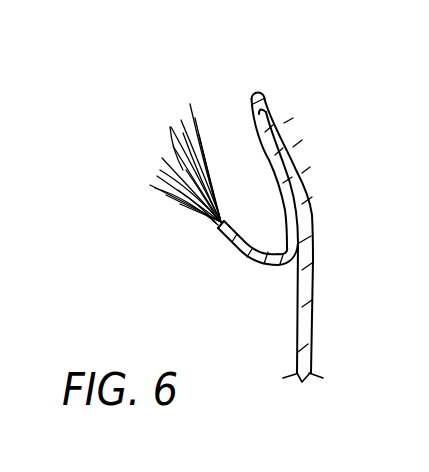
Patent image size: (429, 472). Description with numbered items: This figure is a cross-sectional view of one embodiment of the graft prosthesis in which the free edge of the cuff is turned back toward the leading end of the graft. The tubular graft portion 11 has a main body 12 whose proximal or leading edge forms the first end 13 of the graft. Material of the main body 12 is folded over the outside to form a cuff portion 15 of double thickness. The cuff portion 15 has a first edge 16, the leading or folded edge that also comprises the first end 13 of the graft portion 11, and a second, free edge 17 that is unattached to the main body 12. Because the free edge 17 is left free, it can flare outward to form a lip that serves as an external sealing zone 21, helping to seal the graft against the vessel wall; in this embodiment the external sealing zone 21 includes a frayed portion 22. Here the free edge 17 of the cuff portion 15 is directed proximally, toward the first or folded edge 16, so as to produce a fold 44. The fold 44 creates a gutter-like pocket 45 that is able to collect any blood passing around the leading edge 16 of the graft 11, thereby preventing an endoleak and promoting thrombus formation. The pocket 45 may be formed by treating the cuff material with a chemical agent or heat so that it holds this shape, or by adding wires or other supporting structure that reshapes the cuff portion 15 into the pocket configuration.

The graft portion 11 is at (312, 157).
The main body 12 is at (315, 309).
The first end 13 is at (281, 92).
The cuff portion 15 is at (242, 247).
The first edge 16 is at (269, 83).
The free edge 17 is at (156, 151).
The external sealing zone 21 is at (148, 173).
The frayed portion 22 is at (163, 134).
The fold 44 is at (294, 268).
The pocket 45 is at (256, 203).